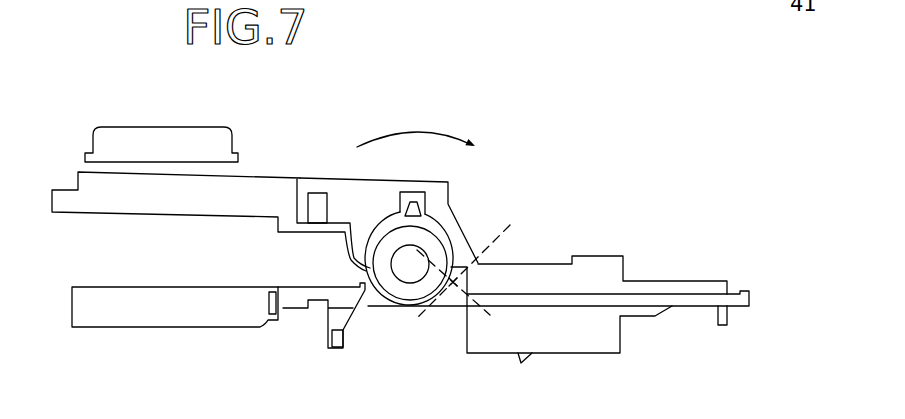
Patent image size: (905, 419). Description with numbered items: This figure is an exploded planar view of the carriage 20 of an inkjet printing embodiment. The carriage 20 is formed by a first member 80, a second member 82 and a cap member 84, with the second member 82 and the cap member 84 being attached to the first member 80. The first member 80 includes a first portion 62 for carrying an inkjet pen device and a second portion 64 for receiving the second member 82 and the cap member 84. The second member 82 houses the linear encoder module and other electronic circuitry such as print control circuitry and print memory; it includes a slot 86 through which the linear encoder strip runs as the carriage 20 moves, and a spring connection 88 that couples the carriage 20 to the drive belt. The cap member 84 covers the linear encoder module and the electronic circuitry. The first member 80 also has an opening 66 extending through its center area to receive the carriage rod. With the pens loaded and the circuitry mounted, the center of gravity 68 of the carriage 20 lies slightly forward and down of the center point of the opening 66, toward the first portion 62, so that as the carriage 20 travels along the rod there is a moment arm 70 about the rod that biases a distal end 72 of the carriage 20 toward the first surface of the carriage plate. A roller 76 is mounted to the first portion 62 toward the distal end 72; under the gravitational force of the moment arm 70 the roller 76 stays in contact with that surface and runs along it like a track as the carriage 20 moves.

The carriage 20 is at (498, 180).
The first portion 62 is at (552, 264).
The second portion 64 is at (80, 179).
The opening 66 is at (411, 268).
The center of gravity 68 is at (453, 272).
The moment arm 70 is at (417, 131).
The distal end 72 is at (728, 311).
The roller 76 is at (728, 323).
The first member 80 is at (283, 178).
The second member 82 is at (143, 287).
The cap member 84 is at (183, 127).
The slot 86 is at (283, 322).
The spring connection 88 is at (344, 350).